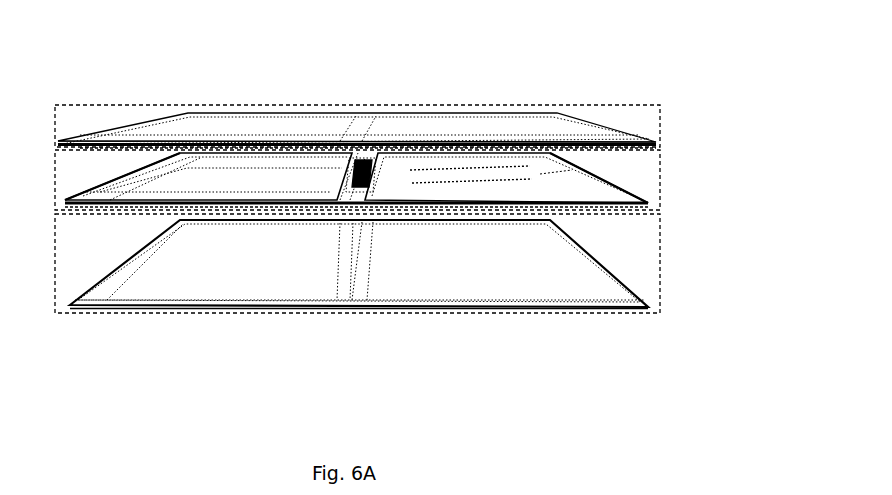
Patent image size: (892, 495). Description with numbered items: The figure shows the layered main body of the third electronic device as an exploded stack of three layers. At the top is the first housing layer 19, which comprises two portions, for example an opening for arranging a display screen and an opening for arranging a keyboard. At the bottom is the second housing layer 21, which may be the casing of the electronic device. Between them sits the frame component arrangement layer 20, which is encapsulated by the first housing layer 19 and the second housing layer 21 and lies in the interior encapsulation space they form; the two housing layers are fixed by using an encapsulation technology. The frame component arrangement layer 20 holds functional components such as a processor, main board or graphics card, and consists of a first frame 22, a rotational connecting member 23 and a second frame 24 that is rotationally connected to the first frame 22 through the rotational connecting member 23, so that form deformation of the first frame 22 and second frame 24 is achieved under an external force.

The first housing layer 19 is at (648, 122).
The frame component arrangement layer 20 is at (653, 183).
The second housing layer 21 is at (653, 280).
The first frame 22 is at (508, 170).
The rotational connecting member 23 is at (362, 182).
The second frame 24 is at (215, 163).